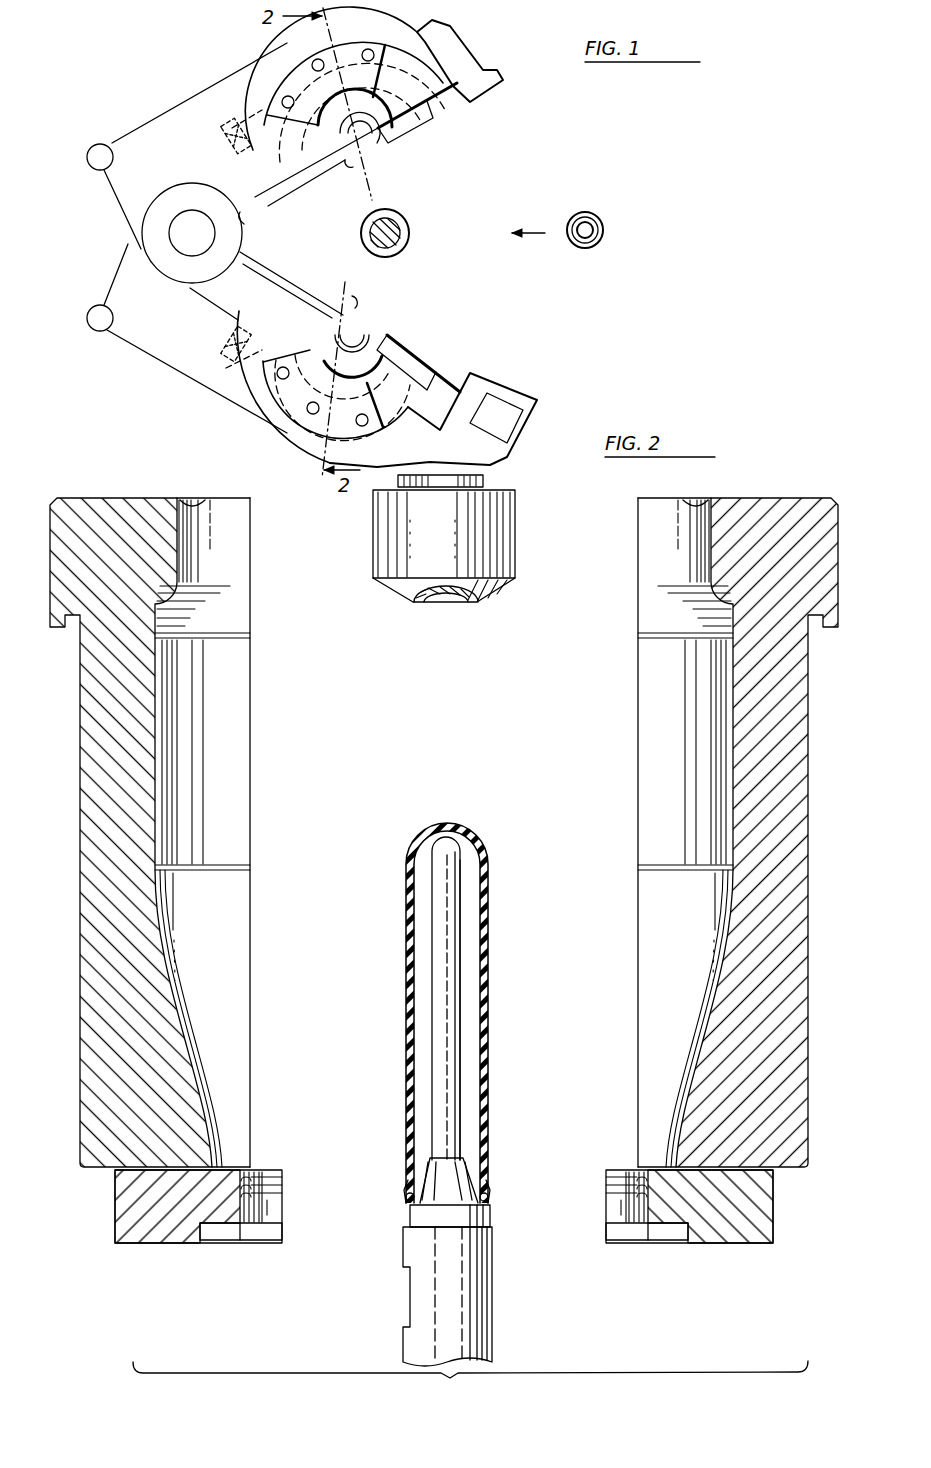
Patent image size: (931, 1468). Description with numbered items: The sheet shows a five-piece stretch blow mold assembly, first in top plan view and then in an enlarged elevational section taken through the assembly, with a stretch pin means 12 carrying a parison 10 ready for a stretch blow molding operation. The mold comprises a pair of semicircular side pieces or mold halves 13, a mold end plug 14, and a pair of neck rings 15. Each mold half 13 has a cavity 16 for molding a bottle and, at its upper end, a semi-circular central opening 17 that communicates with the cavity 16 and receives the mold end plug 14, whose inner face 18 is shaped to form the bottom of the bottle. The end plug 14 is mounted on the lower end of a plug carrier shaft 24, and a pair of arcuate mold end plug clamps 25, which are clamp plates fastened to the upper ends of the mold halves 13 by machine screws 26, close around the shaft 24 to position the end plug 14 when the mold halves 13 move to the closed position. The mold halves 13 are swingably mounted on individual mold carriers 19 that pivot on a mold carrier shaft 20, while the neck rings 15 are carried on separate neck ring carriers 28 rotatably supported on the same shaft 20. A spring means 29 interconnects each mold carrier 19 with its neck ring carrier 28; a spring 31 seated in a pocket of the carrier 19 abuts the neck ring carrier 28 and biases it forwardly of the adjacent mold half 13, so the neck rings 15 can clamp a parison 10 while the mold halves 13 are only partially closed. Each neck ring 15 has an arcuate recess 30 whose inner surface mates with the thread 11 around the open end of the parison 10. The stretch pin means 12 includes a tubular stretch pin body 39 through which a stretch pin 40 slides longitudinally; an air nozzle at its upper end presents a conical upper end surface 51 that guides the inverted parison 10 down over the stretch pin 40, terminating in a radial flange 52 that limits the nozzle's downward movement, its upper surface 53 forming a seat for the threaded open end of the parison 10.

In FIG. 2, the parison 10 is at (491, 1100).
In FIG. 2, the thread 11 is at (489, 1194).
In FIG. 1, the stretch pin means 12 is at (604, 226).
In FIG. 2, the stretch pin means 12 is at (498, 1331).
In FIG. 1, the mold halves 13 is at (311, 180).
In FIG. 2, the mold halves 13 is at (80, 771).
In FIG. 1, the mold end plug 14 is at (412, 247).
In FIG. 2, the mold end plug 14 is at (372, 545).
In FIG. 1, the neck rings 15 is at (440, 130).
In FIG. 2, the neck rings 15 is at (167, 1251).
In FIG. 2, the cavity 16 is at (157, 921).
In FIG. 1, the semi-circular central opening 17 is at (383, 150).
In FIG. 2, the semi-circular central opening 17 is at (192, 510).
In FIG. 2, the inner face 18 is at (426, 604).
In FIG. 1, the mold carriers 19 is at (172, 185).
In FIG. 1, the mold carrier shaft 20 is at (176, 238).
In FIG. 1, the plug carrier shaft 24 is at (399, 238).
In FIG. 2, the plug carrier shaft 24 is at (486, 490).
In FIG. 1, the mold end plug clamps 25 is at (370, 70).
In FIG. 1, the machine screws 26 is at (312, 63).
In FIG. 1, the neck ring carriers 28 is at (257, 214).
In FIG. 1, the spring means 29 is at (228, 128).
In FIG. 1, the arcuate recess 30 is at (346, 234).
In FIG. 2, the arcuate recess 30 is at (262, 1211).
In FIG. 1, the spring 31 is at (228, 140).
In FIG. 2, the stretch pin body 39 is at (479, 1278).
In FIG. 2, the stretch pin 40 is at (461, 1040).
In FIG. 2, the conical upper end surface 51 is at (466, 1175).
In FIG. 2, the radial flange 52 is at (492, 1222).
In FIG. 2, the upper surface 53 is at (406, 1198).